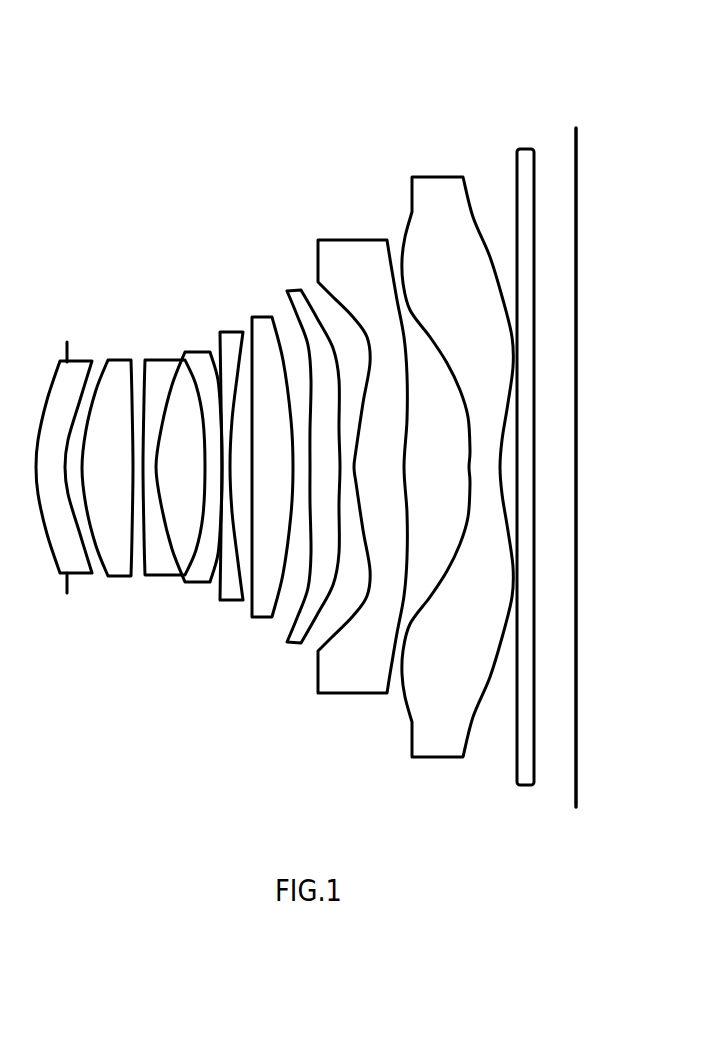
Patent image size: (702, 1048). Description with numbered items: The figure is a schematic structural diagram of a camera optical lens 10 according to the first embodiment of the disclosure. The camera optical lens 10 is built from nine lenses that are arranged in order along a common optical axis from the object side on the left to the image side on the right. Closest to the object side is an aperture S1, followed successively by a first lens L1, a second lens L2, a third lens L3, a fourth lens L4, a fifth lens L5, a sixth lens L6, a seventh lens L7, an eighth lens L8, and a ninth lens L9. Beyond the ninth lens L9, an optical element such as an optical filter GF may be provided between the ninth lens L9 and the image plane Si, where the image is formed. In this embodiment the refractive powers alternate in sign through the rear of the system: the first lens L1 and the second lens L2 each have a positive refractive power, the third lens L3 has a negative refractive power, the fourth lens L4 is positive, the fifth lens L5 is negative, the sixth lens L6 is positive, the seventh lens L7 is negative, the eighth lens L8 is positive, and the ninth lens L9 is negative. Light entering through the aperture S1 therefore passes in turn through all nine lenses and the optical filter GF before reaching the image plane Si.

The camera optical lens 10 is at (326, 64).
The aperture S1 is at (59, 454).
The first lens L1 is at (65, 453).
The second lens L2 is at (107, 455).
The third lens L3 is at (174, 454).
The fourth lens L4 is at (189, 455).
The fifth lens L5 is at (231, 454).
The sixth lens L6 is at (270, 453).
The seventh lens L7 is at (311, 453).
The eighth lens L8 is at (362, 453).
The ninth lens L9 is at (458, 453).
The optical filter GF is at (524, 453).
The image plane Si is at (576, 453).